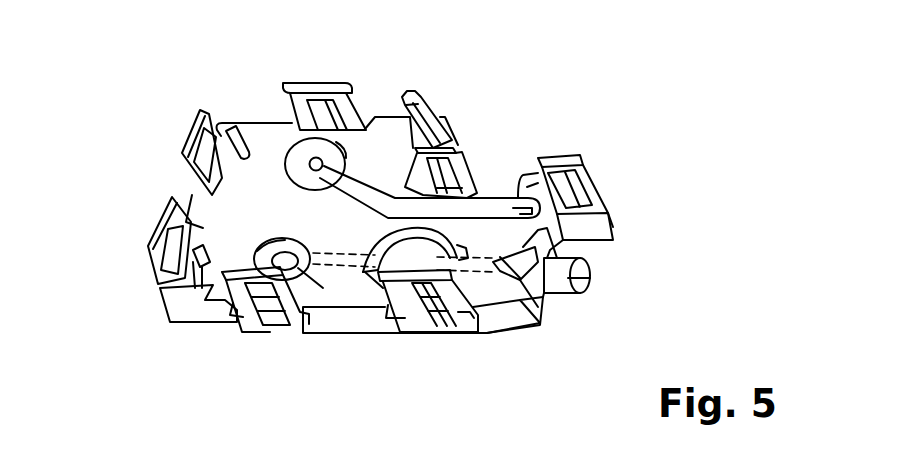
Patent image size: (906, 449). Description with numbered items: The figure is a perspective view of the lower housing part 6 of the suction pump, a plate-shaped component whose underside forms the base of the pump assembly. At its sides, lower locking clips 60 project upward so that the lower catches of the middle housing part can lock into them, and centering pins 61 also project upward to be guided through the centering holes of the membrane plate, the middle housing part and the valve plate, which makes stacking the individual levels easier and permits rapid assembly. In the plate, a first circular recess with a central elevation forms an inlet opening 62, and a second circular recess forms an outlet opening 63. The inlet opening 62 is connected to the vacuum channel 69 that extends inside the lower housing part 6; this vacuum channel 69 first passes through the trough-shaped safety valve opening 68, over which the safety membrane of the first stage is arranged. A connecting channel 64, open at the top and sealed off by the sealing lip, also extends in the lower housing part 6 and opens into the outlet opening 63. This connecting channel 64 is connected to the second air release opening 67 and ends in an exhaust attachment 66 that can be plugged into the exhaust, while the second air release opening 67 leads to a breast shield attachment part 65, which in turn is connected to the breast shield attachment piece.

The lower housing part 6 is at (151, 70).
The lower locking clips 60 is at (308, 84).
The centering pins 61 is at (241, 146).
The inlet opening 62 is at (346, 145).
The outlet opening 63 is at (310, 302).
The connecting channel 64 is at (494, 205).
The breast shield attachment part 65 is at (590, 276).
The exhaust attachment 66 is at (543, 158).
The second air release opening 67 is at (613, 240).
The safety valve opening 68 is at (483, 300).
The vacuum channel 69 is at (343, 282).